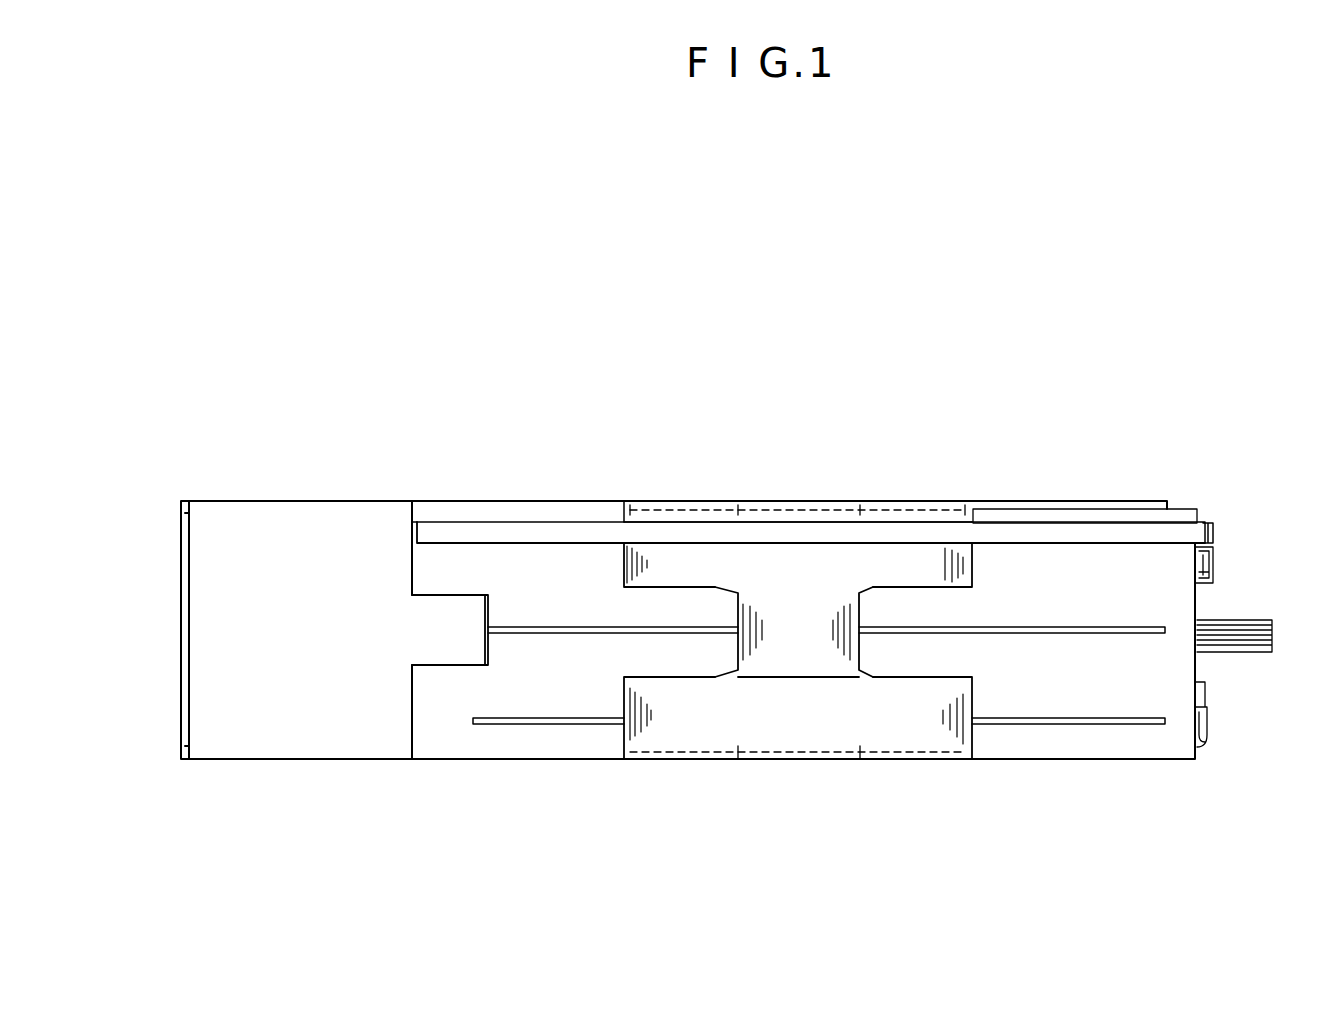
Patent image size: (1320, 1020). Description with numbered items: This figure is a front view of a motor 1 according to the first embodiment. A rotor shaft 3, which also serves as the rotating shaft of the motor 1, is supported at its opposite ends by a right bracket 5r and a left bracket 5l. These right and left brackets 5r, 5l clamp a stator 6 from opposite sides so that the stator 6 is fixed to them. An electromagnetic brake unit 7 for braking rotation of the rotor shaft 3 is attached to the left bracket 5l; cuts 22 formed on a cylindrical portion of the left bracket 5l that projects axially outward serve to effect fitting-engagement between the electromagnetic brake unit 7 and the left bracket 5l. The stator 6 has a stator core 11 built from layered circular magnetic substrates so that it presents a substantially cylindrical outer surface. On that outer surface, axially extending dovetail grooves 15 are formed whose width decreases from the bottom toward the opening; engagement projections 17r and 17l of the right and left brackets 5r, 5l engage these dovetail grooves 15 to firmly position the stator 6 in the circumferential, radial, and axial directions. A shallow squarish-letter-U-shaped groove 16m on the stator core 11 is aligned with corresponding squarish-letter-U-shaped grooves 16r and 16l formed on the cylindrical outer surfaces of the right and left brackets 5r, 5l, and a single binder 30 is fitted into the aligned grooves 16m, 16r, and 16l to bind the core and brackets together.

The motor 1 is at (792, 391).
The rotor shaft 3 is at (1240, 619).
The left bracket 5l is at (587, 500).
The right bracket 5r is at (1012, 500).
The stator 6 is at (837, 500).
The electromagnetic brake unit 7 is at (312, 760).
The stator core 11 is at (795, 745).
The dovetail groove 15 is at (798, 590).
The squarish-letter-U-shaped groove of the left bracket 16l is at (500, 514).
The squarish-letter-U-shaped groove of the stator core 16m is at (801, 516).
The squarish-letter-U-shaped groove of the right bracket 16r is at (1140, 518).
The engagement projection of the left bracket 17l is at (677, 500).
The engagement projection of the right bracket 17r is at (927, 500).
The cut 22 is at (442, 660).
The binder 30 is at (1065, 548).